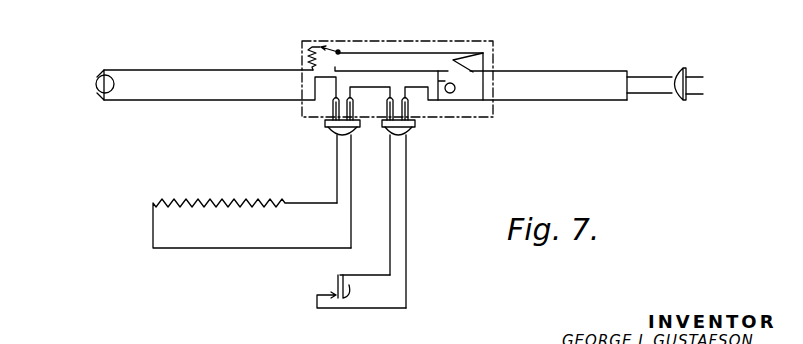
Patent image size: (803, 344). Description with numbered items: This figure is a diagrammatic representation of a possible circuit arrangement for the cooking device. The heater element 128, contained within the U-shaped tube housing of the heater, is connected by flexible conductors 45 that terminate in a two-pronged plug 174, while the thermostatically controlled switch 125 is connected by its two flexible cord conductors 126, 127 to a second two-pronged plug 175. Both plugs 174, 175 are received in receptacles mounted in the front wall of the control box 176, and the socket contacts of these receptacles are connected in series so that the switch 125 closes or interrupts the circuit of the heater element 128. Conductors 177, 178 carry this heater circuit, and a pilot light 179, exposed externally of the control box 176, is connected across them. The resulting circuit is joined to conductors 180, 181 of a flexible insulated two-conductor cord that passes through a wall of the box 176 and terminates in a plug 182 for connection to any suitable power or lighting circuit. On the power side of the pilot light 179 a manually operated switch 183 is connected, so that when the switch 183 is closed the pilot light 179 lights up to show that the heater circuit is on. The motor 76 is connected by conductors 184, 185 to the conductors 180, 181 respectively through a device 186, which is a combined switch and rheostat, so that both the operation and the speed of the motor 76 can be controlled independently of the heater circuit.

The motor 76 is at (92, 72).
The conductor 185 is at (192, 70).
The conductor 184 is at (177, 100).
The combined switch and rheostat 186 is at (333, 40).
The conductor 177 is at (404, 68).
The control box 176 is at (456, 36).
The switch 183 is at (486, 58).
The pilot light 179 is at (458, 86).
The conductor 178 is at (463, 100).
The conductor 180 is at (580, 70).
The conductor 181 is at (577, 101).
The plug 182 is at (690, 68).
The plug 174 is at (327, 128).
The plug 175 is at (410, 127).
The conductors 45 is at (333, 162).
The heater element 128 is at (227, 200).
The conductor 126 is at (388, 233).
The conductor 127 is at (410, 222).
The thermostatic switch 125 is at (347, 305).